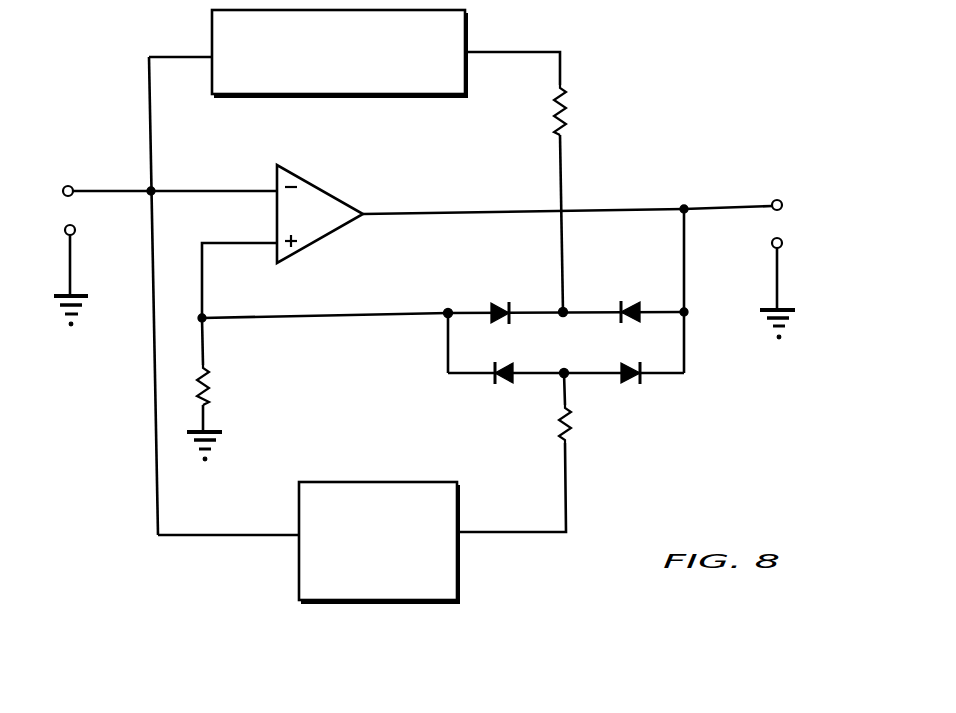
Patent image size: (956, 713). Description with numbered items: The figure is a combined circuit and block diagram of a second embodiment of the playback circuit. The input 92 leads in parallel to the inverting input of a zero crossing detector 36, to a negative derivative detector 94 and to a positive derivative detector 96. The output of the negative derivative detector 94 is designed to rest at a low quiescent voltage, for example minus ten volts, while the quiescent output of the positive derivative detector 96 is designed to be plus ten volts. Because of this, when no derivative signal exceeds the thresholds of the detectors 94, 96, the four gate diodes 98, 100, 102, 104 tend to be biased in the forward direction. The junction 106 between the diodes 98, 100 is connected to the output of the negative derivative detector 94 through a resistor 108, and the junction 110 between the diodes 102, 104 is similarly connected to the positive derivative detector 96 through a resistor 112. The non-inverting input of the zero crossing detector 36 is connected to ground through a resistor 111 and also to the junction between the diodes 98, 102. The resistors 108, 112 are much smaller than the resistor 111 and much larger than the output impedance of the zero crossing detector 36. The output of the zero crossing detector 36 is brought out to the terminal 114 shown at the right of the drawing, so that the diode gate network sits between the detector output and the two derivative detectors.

The zero crossing detector 36 is at (337, 195).
The input 92 is at (60, 212).
The negative derivative detector 94 is at (211, 33).
The positive derivative detector 96 is at (460, 578).
The gate diode 98 is at (500, 308).
The gate diode 100 is at (637, 322).
The gate diode 102 is at (492, 386).
The gate diode 104 is at (640, 387).
The junction 106 is at (565, 308).
The resistor 108 is at (566, 118).
The junction 110 is at (566, 380).
The resistor 111 is at (207, 389).
The resistor 112 is at (569, 441).
The output terminal 114 is at (800, 216).